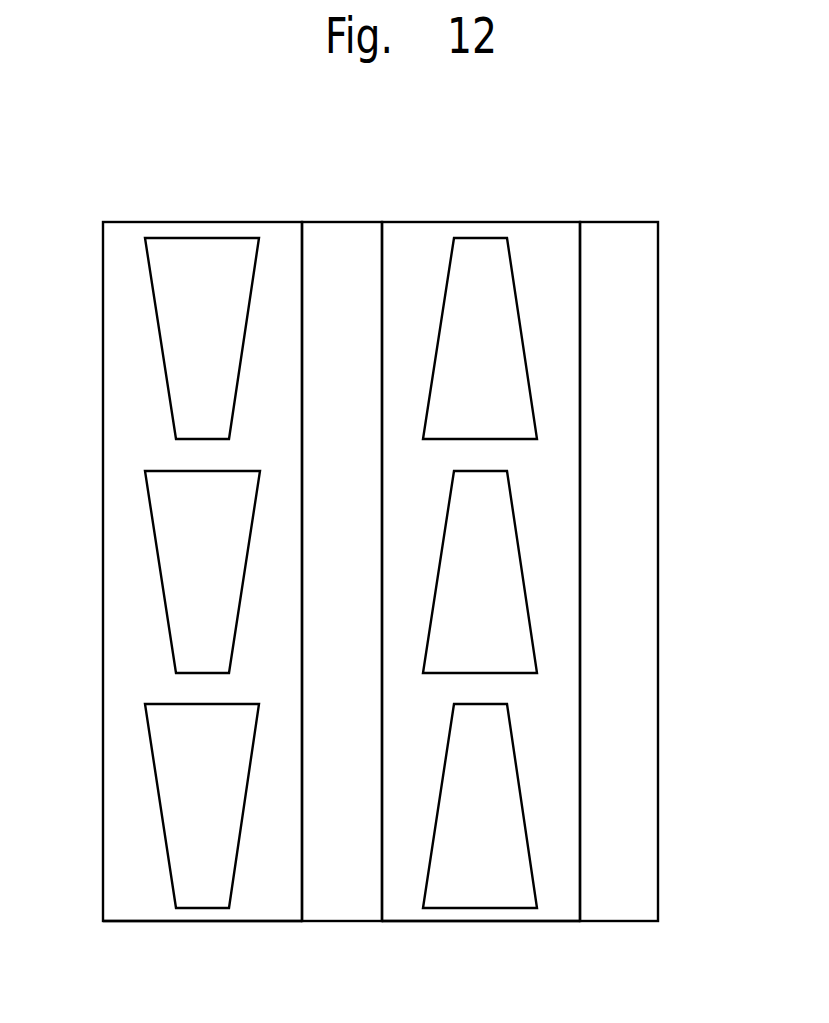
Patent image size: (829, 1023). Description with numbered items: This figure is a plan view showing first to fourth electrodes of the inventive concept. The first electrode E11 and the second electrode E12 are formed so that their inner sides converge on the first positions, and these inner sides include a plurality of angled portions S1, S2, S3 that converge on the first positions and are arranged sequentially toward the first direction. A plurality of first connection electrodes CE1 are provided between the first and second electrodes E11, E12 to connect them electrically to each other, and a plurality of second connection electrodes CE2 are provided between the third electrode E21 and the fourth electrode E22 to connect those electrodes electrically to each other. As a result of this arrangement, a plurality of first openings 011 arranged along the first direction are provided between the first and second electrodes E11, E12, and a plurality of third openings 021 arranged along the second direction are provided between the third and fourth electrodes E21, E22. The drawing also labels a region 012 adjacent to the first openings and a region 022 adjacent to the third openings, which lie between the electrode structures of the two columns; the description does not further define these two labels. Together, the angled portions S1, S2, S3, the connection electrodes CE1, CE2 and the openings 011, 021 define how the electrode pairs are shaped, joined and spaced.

The first opening 011 is at (207, 247).
The second opening of first pixel column 012 is at (338, 235).
The third opening 021 is at (481, 248).
The second opening of second pixel column 022 is at (622, 235).
The angled portion S1 is at (165, 373).
The angled portion S2 is at (165, 608).
The angled portion S3 is at (165, 840).
The first connection electrode CE1 is at (204, 455).
The second connection electrode CE2 is at (478, 454).
The first electrode E11 is at (137, 909).
The second electrode E12 is at (262, 909).
The third electrode E21 is at (402, 909).
The fourth electrode E22 is at (560, 909).